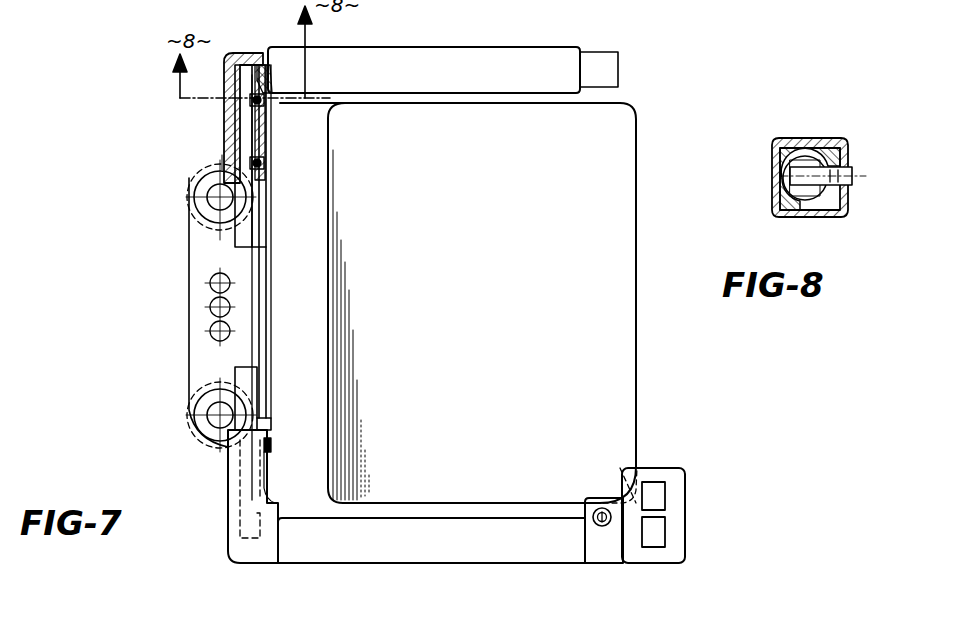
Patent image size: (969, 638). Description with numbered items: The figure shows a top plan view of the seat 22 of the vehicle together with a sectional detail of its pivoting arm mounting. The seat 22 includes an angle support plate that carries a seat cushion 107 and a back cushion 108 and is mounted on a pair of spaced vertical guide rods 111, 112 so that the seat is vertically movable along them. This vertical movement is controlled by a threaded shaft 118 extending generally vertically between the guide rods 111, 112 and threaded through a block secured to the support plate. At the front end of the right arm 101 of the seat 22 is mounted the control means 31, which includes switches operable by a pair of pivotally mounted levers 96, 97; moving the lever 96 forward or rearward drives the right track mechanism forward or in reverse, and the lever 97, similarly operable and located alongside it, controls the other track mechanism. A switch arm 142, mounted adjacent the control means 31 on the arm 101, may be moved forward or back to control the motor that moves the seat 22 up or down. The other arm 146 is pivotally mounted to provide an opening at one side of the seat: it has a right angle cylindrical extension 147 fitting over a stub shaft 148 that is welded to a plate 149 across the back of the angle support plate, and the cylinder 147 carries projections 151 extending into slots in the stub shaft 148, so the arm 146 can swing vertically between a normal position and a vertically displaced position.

In FIG. 7, the seat 22 is at (642, 120).
In FIG. 7, the seat cushion 107 is at (628, 217).
In FIG. 7, the back cushion 108 is at (318, 306).
In FIG. 7, the arm 146 is at (545, 40).
In FIG. 7, the right angle cylindrical extension 147 is at (224, 138).
In FIG. 8, the right angle cylindrical extension 147 is at (774, 160).
In FIG. 7, the stub shaft 148 is at (252, 258).
In FIG. 8, the stub shaft 148 is at (843, 120).
In FIG. 7, the plate 149 is at (252, 337).
In FIG. 7, the projections 151 is at (262, 104).
In FIG. 8, the projections 151 is at (852, 180).
In FIG. 7, the vertical guide rod 111 is at (207, 192).
In FIG. 7, the vertical guide rod 112 is at (206, 428).
In FIG. 7, the threaded shaft 118 is at (210, 304).
In FIG. 7, the arm of the seat 101 is at (495, 565).
In FIG. 7, the switch arm 142 is at (602, 507).
In FIG. 7, the control means 31 is at (692, 498).
In FIG. 7, the lever 97 is at (656, 482).
In FIG. 7, the lever 96 is at (660, 538).